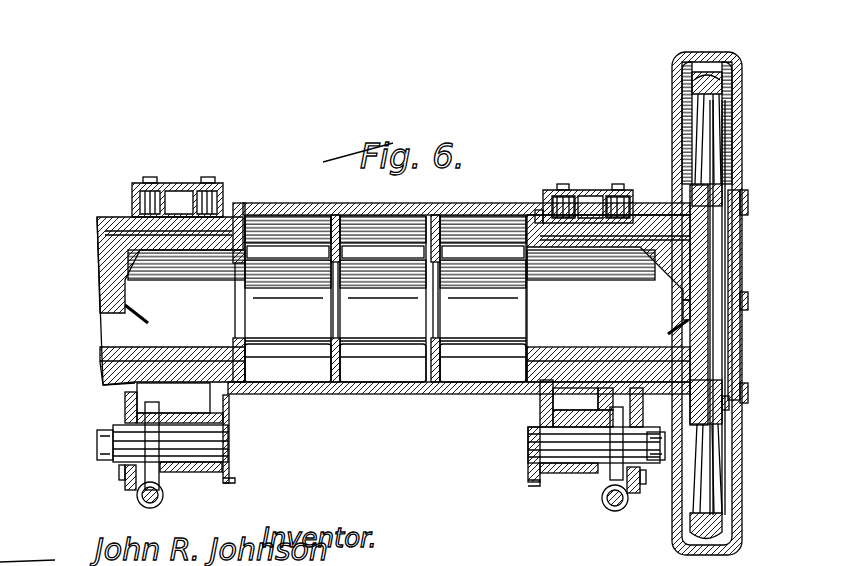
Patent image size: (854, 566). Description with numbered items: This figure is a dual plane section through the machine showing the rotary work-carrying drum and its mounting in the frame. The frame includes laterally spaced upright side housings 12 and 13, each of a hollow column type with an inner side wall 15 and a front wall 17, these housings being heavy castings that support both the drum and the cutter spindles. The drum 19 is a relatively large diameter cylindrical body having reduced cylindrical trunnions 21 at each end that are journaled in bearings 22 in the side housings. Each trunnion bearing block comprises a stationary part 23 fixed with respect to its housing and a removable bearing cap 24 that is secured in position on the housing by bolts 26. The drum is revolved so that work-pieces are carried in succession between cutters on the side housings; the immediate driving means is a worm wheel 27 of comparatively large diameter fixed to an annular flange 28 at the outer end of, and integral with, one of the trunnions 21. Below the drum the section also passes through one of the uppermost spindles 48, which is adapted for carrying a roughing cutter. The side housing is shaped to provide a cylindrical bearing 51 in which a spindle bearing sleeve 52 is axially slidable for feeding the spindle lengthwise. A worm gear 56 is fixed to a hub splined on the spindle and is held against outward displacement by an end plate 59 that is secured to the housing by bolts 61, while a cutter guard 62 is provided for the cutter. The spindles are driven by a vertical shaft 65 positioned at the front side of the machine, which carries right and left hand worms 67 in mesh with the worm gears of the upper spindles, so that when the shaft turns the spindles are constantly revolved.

The side housing 12 is at (113, 376).
The side housing 13 is at (541, 410).
The inner side wall 15 is at (229, 398).
The front wall 17 is at (200, 473).
The drum 19 is at (489, 204).
The trunnion 21 is at (128, 238).
The bearing 22 is at (200, 232).
The stationary part 23 is at (163, 378).
The bearing cap 24 is at (165, 205).
The bolt 26 is at (560, 192).
The worm wheel 27 is at (698, 108).
The annular flange 28 is at (625, 195).
The spindle 48 is at (229, 434).
The cylindrical bearing 51 is at (190, 421).
The spindle bearing sleeve 52 is at (205, 445).
The worm gear 56 is at (143, 482).
The end plate 59 is at (122, 476).
The bolt 61 is at (646, 398).
The cutter guard 62 is at (234, 481).
The vertical shaft 65 is at (156, 502).
The worm 67 is at (142, 500).